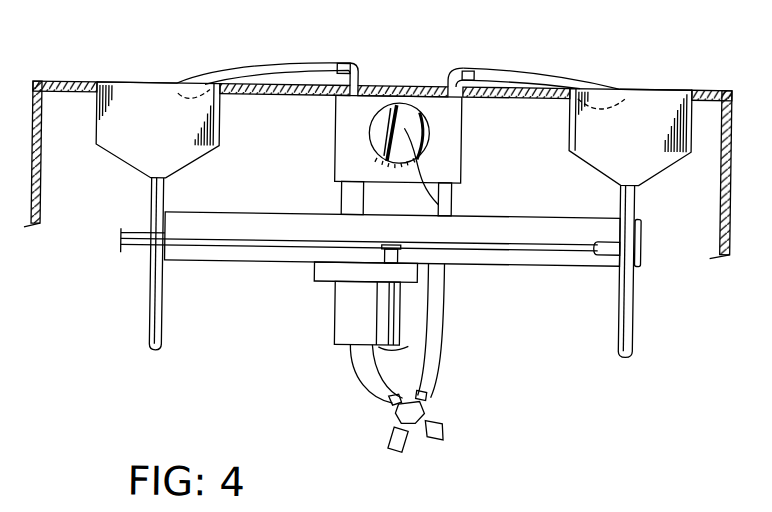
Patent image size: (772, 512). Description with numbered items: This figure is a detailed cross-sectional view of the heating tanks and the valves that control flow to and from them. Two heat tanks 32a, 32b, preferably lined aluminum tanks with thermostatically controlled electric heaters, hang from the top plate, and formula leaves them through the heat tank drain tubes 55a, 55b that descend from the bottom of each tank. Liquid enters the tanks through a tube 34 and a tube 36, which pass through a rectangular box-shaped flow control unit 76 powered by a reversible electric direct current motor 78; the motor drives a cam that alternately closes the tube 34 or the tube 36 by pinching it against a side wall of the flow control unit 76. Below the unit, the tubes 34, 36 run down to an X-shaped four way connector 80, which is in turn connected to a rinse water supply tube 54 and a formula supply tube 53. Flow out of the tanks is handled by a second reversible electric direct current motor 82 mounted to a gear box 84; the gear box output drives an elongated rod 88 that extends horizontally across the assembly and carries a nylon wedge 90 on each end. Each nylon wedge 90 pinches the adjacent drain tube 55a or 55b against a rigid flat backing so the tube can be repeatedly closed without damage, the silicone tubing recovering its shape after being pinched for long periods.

The heat tank 32a is at (151, 90).
The heat tank 32b is at (640, 98).
The tube 34 is at (264, 62).
The tube 36 is at (511, 70).
The flow control unit 76 is at (458, 147).
The reversible electric direct current motor 78 is at (425, 126).
The elongated rod 88 is at (502, 250).
The nylon wedge 90 is at (140, 252).
The heat tank drain tube 55a is at (167, 312).
The heat tank drain tube 55b is at (634, 312).
The gear box 84 is at (327, 283).
The second reversible electric direct current motor 82 is at (340, 326).
The X-shaped four way connector 80 is at (427, 411).
The rinse water supply tube 54 is at (392, 441).
The formula supply tube 53 is at (441, 444).